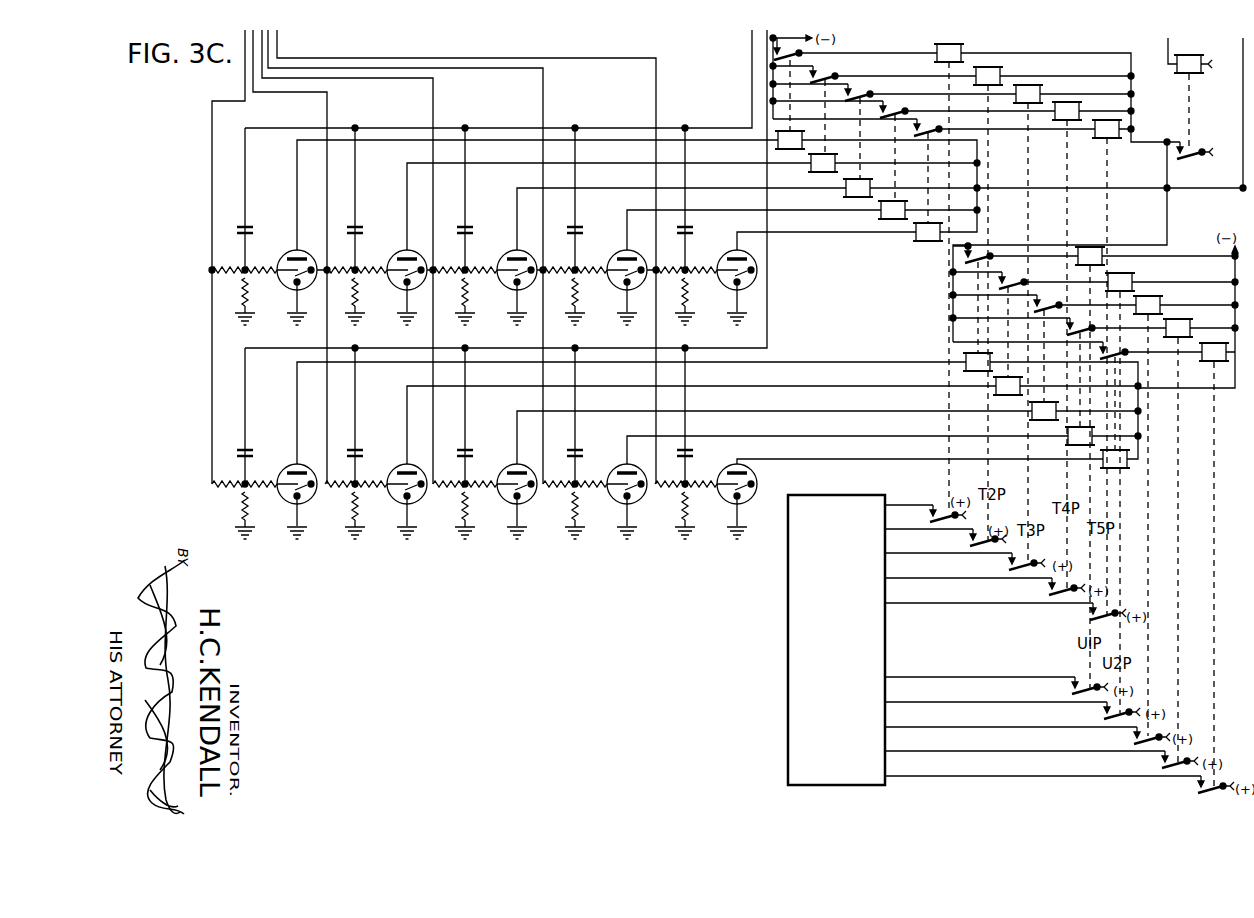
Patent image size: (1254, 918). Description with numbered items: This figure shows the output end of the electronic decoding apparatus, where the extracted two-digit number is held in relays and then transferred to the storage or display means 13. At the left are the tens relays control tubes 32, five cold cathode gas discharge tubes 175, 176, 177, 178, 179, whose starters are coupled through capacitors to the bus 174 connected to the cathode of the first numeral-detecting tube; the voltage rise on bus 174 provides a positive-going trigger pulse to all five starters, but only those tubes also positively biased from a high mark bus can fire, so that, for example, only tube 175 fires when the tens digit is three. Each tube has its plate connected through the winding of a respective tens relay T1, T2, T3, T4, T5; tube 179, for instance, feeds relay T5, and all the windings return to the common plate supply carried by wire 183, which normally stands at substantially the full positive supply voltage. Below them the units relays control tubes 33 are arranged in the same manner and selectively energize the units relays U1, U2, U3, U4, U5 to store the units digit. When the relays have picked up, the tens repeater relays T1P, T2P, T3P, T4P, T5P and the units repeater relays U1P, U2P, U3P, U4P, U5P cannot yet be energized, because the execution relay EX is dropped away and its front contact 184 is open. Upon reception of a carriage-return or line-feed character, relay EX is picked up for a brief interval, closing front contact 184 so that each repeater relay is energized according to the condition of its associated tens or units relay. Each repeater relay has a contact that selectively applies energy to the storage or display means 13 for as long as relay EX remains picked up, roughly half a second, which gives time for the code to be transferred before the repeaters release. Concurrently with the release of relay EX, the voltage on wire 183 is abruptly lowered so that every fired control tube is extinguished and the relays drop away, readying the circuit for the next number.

The bus 174 is at (752, 63).
The cold cathode tube 175 is at (284, 258).
The cold cathode tube 176 is at (394, 258).
The cold cathode tube 177 is at (504, 258).
The cold cathode tube 178 is at (614, 258).
The cold cathode tube 179 is at (724, 258).
The tens relays control tubes 32 is at (203, 318).
The units relays control tubes 33 is at (203, 535).
The storage or display means 13 is at (885, 658).
The wire 183 is at (1243, 110).
The front contact 184 is at (1183, 162).
The tens relay T1 is at (778, 141).
The tens relay T2 is at (811, 168).
The tens relay T3 is at (846, 192).
The tens relay T4 is at (881, 214).
The tens relay T5 is at (920, 242).
The repeater relay T1P is at (961, 56).
The repeater relay T2P is at (1000, 77).
The repeater relay T3P is at (1040, 96).
The repeater relay T4P is at (1079, 113).
The repeater relay T5P is at (1119, 131).
The units relay U1 is at (967, 366).
The units relay U2 is at (997, 393).
The units relay U3 is at (1033, 419).
The units relay U4 is at (1068, 443).
The units relay U5 is at (1115, 470).
The repeater relay U1P is at (1092, 249).
The repeater relay U2P is at (1132, 283).
The repeater relay U3P is at (1160, 306).
The repeater relay U4P is at (1190, 329).
The repeater relay U5P is at (1180, 565).
The execution relay EX is at (1190, 57).